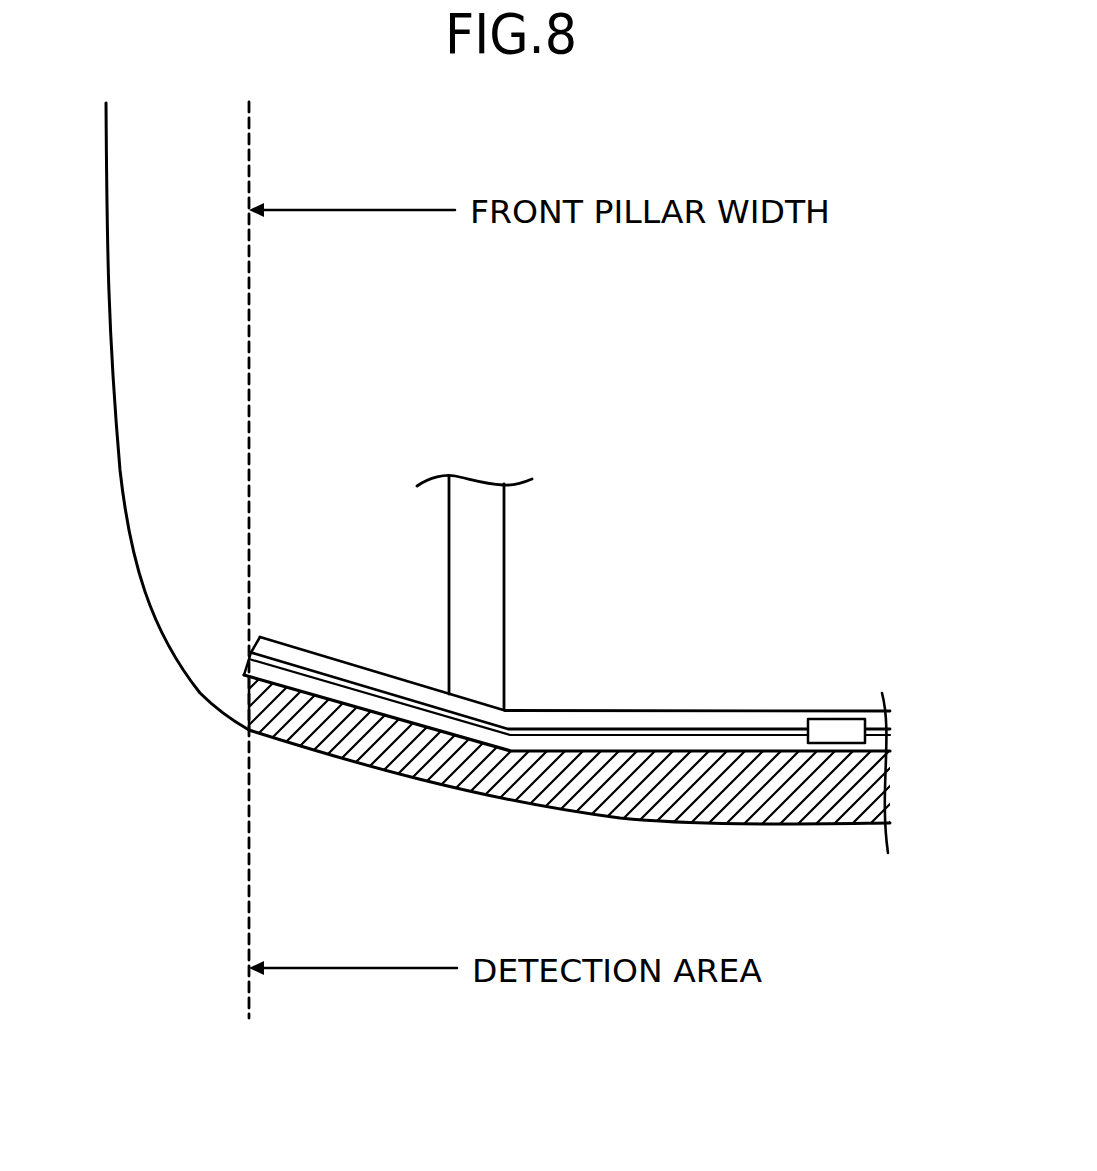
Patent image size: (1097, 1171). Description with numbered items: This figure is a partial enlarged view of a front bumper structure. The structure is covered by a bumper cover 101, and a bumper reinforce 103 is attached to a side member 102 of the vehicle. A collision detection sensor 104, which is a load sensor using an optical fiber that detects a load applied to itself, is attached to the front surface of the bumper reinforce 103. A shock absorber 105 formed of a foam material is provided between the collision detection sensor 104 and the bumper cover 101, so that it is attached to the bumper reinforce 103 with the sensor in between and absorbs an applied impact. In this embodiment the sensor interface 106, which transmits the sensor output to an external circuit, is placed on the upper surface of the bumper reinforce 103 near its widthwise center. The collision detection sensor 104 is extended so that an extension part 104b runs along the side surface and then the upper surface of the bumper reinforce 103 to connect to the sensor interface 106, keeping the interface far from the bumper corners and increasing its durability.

The bumper cover 101 is at (525, 812).
The side member 102 is at (493, 548).
The bumper reinforce 103 is at (684, 722).
The collision detection sensor 104 is at (572, 751).
The extension part 104b is at (318, 670).
The shock absorber 105 is at (295, 737).
The sensor interface 106 is at (834, 732).